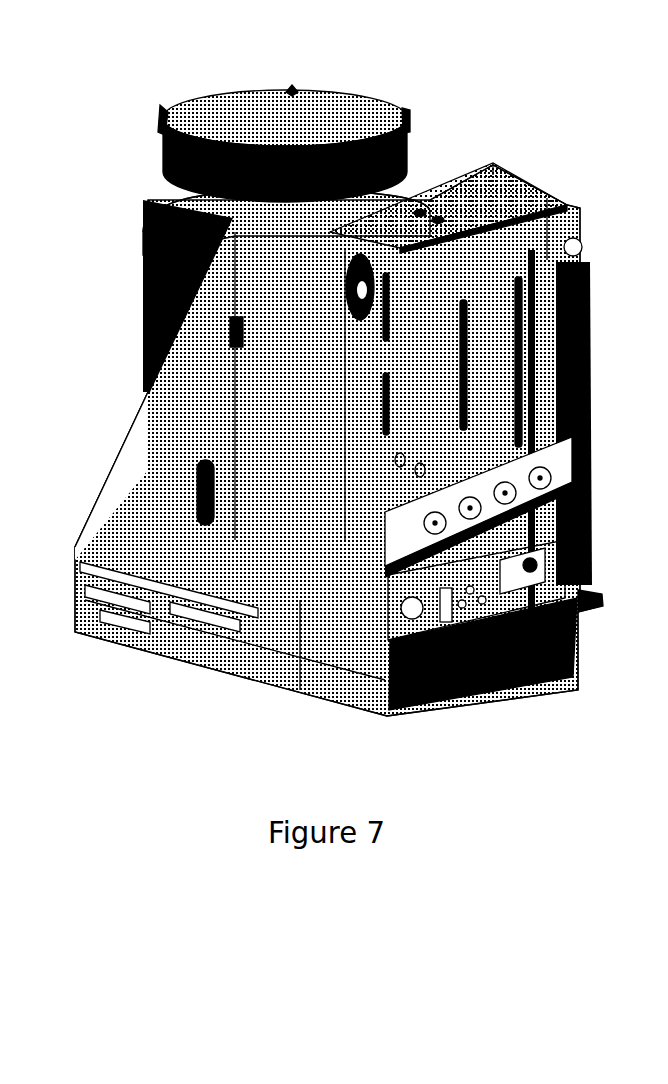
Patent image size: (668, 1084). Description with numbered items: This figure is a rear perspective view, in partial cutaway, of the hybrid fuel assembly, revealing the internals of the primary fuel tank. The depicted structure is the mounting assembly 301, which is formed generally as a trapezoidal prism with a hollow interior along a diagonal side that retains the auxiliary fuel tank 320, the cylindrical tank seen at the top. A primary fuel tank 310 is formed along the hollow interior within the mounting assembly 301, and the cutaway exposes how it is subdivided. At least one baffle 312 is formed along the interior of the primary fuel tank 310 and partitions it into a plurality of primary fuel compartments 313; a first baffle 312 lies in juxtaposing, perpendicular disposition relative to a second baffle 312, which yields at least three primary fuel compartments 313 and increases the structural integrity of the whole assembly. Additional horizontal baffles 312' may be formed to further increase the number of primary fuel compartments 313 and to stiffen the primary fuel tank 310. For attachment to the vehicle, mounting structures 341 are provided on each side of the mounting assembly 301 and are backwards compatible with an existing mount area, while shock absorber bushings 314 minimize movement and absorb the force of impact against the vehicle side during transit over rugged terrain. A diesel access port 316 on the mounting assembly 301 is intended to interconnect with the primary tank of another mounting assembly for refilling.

The mounting assembly 301 is at (344, 404).
The auxiliary fuel tank 320 is at (166, 117).
The mounting structures 341 is at (345, 283).
The baffle 312 is at (448, 182).
The primary fuel tank 310 is at (545, 205).
The horizontal baffles 312' is at (190, 469).
The primary fuel compartments 313 is at (370, 457).
The shock absorber bushings 314 is at (543, 483).
The diesel access port 316 is at (130, 603).